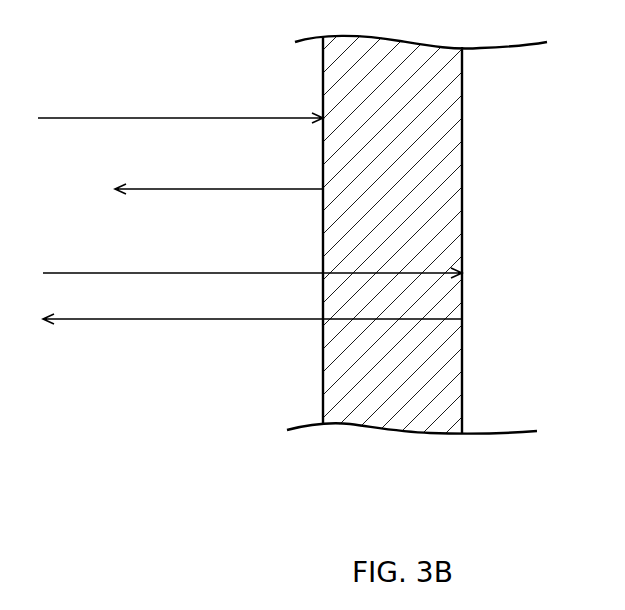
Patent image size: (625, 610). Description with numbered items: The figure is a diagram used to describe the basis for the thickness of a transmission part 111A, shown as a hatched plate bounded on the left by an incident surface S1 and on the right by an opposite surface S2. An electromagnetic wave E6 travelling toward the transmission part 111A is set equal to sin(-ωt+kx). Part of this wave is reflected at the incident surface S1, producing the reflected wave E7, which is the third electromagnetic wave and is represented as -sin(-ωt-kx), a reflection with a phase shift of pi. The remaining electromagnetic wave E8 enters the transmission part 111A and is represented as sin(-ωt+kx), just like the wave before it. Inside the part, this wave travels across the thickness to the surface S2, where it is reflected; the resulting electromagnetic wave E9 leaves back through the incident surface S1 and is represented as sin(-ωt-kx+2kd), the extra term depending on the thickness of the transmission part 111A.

The transmission part 111A is at (412, 403).
The incident surface S1 is at (323, 390).
The surface S2 is at (462, 370).
The electromagnetic wave E6 is at (165, 118).
The reflected wave E7 is at (230, 189).
The electromagnetic wave E8 is at (434, 272).
The electromagnetic wave E9 is at (220, 319).